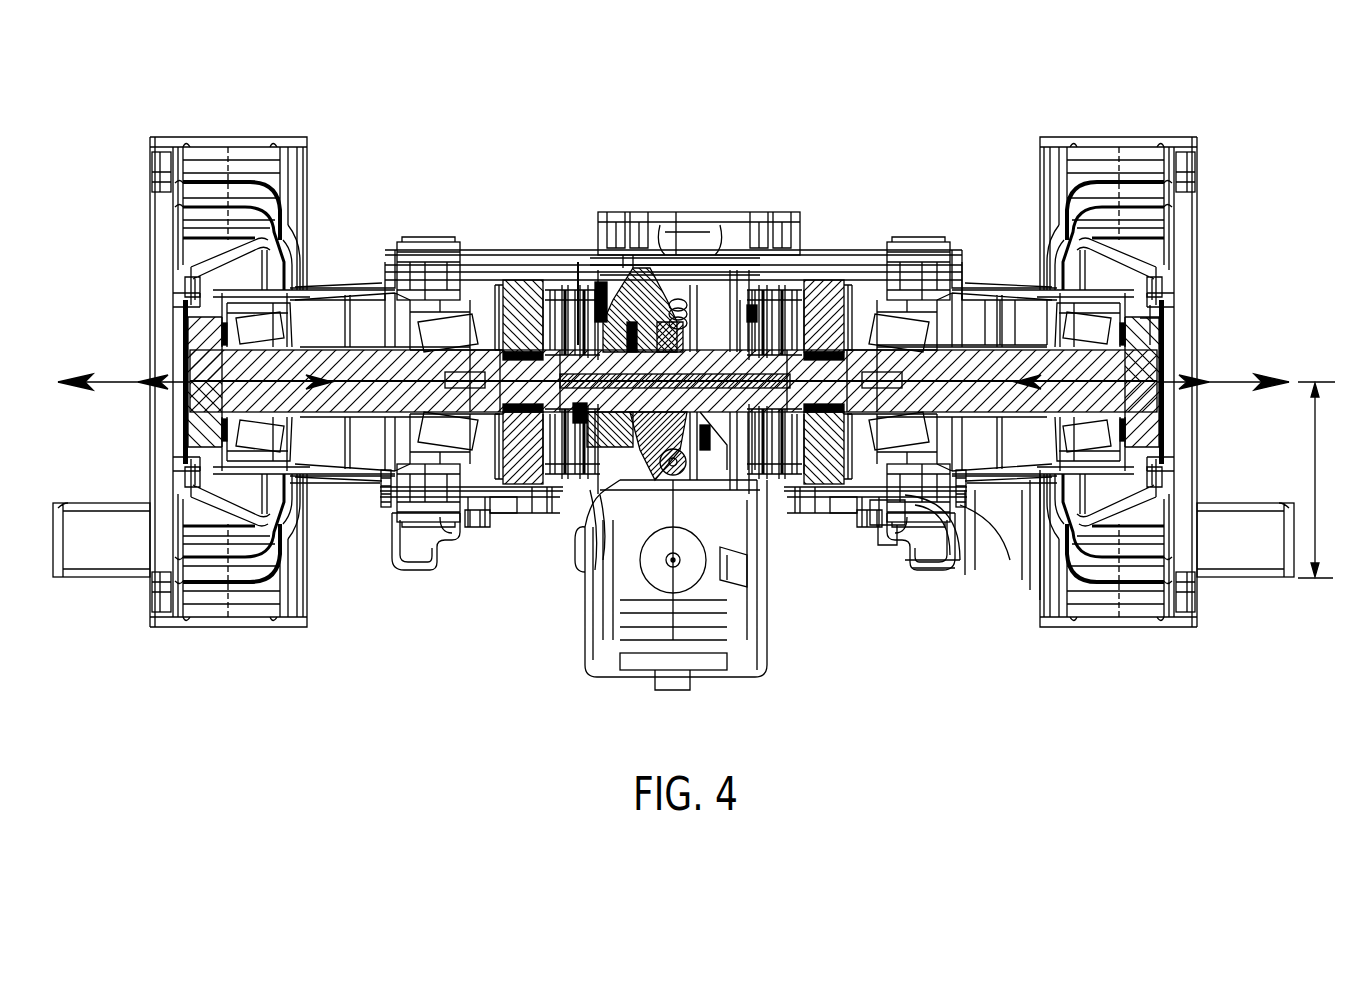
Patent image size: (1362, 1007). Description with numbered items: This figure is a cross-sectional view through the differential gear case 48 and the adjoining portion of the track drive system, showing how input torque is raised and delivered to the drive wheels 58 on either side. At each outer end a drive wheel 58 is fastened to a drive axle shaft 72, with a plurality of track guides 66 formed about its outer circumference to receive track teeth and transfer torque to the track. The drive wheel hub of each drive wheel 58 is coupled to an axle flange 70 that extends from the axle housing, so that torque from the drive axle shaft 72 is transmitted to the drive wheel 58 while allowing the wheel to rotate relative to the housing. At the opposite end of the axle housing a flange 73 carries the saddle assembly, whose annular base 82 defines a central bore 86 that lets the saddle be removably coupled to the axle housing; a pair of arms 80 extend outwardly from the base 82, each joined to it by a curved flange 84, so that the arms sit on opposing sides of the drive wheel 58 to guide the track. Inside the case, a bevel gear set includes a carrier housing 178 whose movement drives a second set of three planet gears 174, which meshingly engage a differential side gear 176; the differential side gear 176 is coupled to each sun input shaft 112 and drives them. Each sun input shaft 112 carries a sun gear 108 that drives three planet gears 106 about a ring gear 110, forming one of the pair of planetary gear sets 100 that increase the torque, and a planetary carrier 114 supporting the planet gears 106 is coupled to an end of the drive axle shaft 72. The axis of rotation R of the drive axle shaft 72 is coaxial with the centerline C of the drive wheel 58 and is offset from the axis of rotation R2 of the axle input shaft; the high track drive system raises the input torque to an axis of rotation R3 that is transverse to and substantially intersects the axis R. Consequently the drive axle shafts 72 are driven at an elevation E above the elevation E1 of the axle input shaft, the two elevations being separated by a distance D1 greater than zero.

The differential gear case 48 is at (739, 148).
The drive wheel 58 is at (1137, 128).
The track guides 66 is at (240, 137).
The axle flange 70 is at (1155, 318).
The drive axle shaft 72 is at (975, 400).
The flange 73 is at (880, 527).
The arms 80 is at (1016, 587).
The annular base 82 is at (922, 240).
The flange 84 is at (928, 565).
The central bore 86 is at (945, 543).
The planetary gear sets 100 is at (516, 243).
The planet gears 106 is at (822, 310).
The sun gear 108 is at (510, 395).
The ring gear 110 is at (527, 490).
The sun input shaft 112 is at (547, 282).
The planetary carrier 114 is at (468, 248).
The second set of three planet gears 174 is at (686, 462).
The differential side gear 176 is at (625, 450).
The carrier housing 178 is at (702, 315).
The centerline C is at (250, 378).
The axis of rotation R is at (372, 382).
The axis of rotation R2 is at (683, 575).
The axis of rotation R3 is at (578, 262).
The distance D1 is at (1312, 470).
The elevation E is at (1325, 379).
The elevation E1 is at (1328, 582).